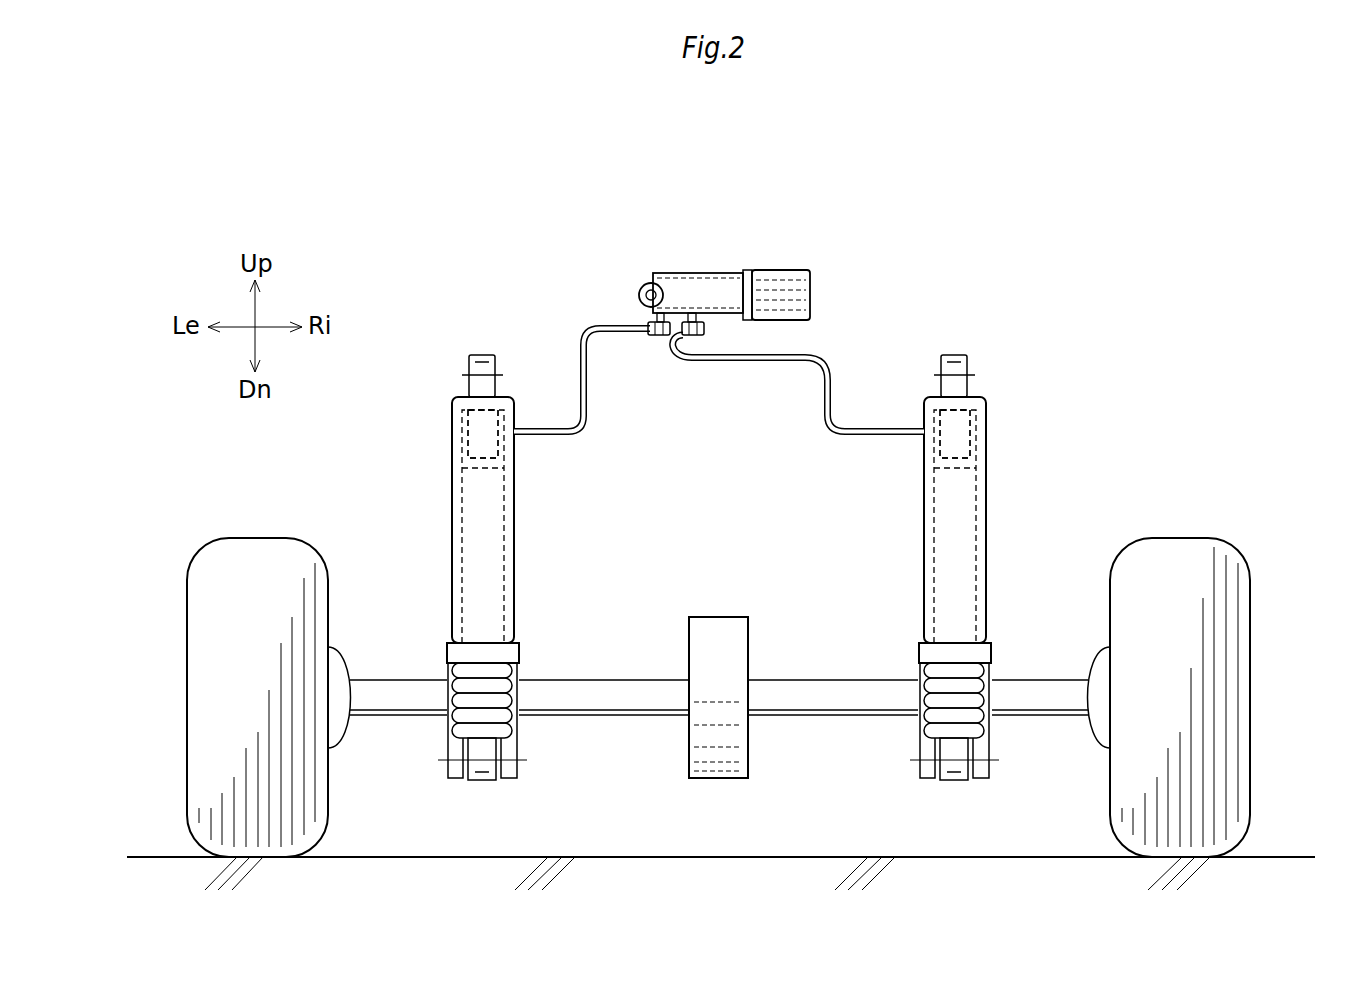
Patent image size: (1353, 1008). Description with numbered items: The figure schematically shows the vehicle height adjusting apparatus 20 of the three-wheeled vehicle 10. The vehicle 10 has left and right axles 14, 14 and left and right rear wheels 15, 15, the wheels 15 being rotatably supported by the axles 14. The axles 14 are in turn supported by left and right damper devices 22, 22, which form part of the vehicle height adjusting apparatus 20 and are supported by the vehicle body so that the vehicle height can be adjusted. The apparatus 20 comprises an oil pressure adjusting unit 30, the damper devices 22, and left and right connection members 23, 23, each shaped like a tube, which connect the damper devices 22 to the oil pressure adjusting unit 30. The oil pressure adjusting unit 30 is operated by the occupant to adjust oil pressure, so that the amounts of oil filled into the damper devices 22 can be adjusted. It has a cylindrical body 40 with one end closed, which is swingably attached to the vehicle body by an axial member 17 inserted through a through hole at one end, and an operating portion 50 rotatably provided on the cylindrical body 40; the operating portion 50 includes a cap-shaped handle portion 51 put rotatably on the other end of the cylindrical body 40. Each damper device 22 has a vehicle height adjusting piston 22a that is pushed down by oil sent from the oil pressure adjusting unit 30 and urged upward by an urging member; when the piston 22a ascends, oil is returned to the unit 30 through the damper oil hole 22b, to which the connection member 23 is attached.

The three-wheeled vehicle 10 is at (1165, 288).
The axle 14 is at (597, 700).
The rear wheel 15 is at (254, 538).
The axial member 17 is at (639, 295).
The vehicle height adjusting apparatus 20 is at (1056, 190).
The damper device 22 is at (453, 398).
The vehicle height adjusting piston 22a is at (483, 470).
The damper oil hole 22b is at (510, 428).
The connection member 23 is at (578, 372).
The oil pressure adjusting unit 30 is at (727, 260).
The cylindrical body 40 is at (722, 303).
The operating portion 50 is at (800, 322).
The handle portion 51 is at (790, 300).